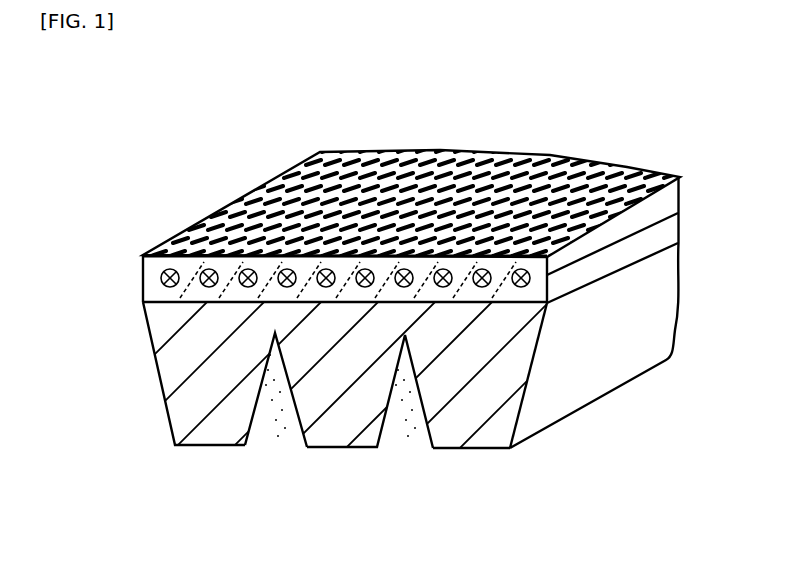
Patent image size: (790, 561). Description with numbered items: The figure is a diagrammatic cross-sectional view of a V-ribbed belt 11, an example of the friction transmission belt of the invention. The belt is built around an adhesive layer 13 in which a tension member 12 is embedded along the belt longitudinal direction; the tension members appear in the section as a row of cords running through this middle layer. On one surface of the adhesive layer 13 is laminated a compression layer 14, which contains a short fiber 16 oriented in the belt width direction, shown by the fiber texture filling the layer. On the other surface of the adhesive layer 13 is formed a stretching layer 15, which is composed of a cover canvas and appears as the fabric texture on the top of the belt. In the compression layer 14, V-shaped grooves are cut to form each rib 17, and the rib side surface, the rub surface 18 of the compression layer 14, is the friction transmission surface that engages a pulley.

The V-ribbed belt 11 is at (604, 112).
The tension member 12 is at (677, 212).
The adhesive layer 13 is at (140, 293).
The compression layer 14 is at (518, 395).
The stretching layer 15 is at (342, 253).
The short fiber 16 is at (195, 440).
The rib 17 is at (463, 437).
The rub surface 18 is at (267, 413).